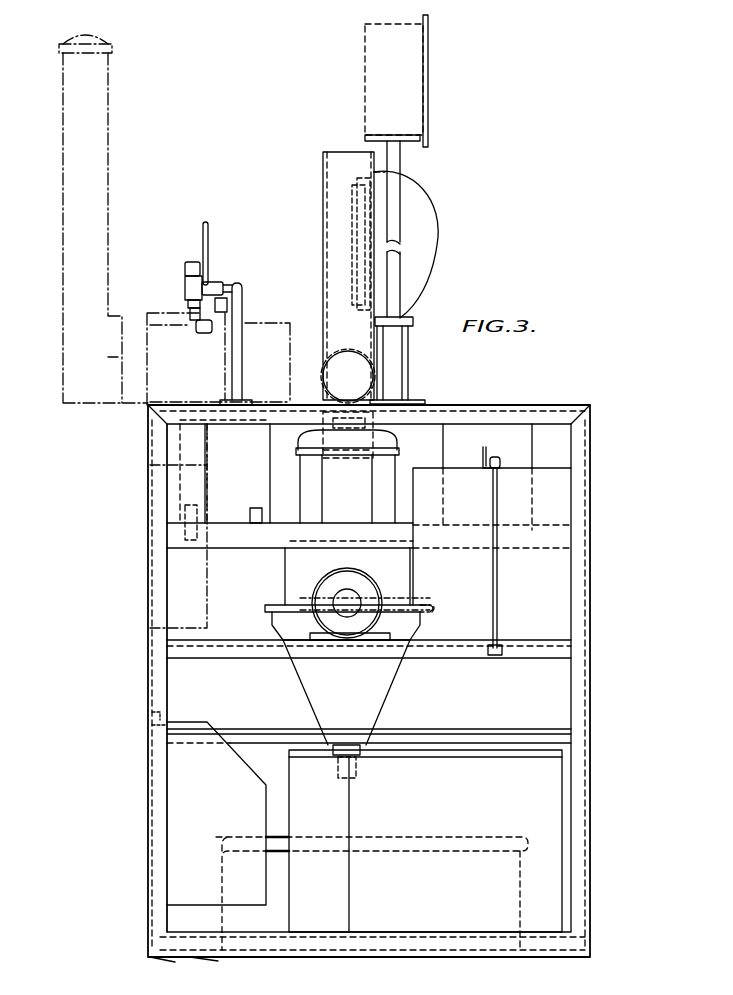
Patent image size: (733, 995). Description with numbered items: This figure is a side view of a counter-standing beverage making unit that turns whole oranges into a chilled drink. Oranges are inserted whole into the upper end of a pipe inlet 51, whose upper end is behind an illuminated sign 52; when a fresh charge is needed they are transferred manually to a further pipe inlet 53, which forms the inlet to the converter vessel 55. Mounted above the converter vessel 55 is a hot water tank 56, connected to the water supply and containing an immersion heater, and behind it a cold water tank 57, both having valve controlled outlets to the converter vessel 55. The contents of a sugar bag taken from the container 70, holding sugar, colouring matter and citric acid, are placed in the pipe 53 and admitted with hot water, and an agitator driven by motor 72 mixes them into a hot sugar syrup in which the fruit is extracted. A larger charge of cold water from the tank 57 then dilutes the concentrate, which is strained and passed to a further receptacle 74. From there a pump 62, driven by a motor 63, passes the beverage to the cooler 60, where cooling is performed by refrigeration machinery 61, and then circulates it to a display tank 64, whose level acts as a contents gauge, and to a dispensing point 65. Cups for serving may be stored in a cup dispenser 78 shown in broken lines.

The pipe inlet 51 is at (330, 166).
The illuminated sign 52 is at (426, 90).
The further pipe inlet 53 is at (322, 495).
The converter vessel 55 is at (298, 686).
The hot water tank 56 is at (520, 438).
The cold water tank 57 is at (245, 438).
The cooler 60 is at (562, 586).
The refrigeration machinery 61 is at (555, 893).
The pump 62 is at (320, 592).
The motor 63 is at (175, 863).
The display tank 64 is at (432, 230).
The dispensing point 65 is at (208, 244).
The container 70 is at (172, 602).
The motor 72 is at (385, 437).
The receptacle 74 is at (521, 843).
The cup dispenser 78 is at (75, 326).